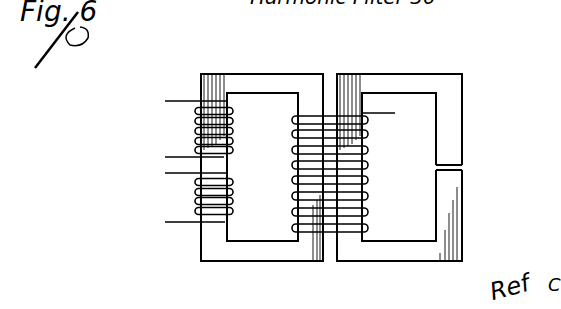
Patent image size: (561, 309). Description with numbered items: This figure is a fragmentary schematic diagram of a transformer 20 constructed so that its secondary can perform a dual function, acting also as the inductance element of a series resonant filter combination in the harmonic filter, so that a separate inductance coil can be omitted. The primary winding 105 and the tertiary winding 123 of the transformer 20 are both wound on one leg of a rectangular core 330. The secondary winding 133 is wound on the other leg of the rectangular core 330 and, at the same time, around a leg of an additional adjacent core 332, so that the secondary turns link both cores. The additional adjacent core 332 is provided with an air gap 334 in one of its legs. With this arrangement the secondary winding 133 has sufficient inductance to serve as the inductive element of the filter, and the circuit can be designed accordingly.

The transformer 20 is at (348, 60).
The rectangular core 330 is at (292, 252).
The additional adjacent core 332 is at (379, 252).
The air gap 334 is at (465, 167).
The tertiary winding 123 is at (234, 130).
The primary winding 105 is at (234, 188).
The secondary winding 133 is at (367, 157).